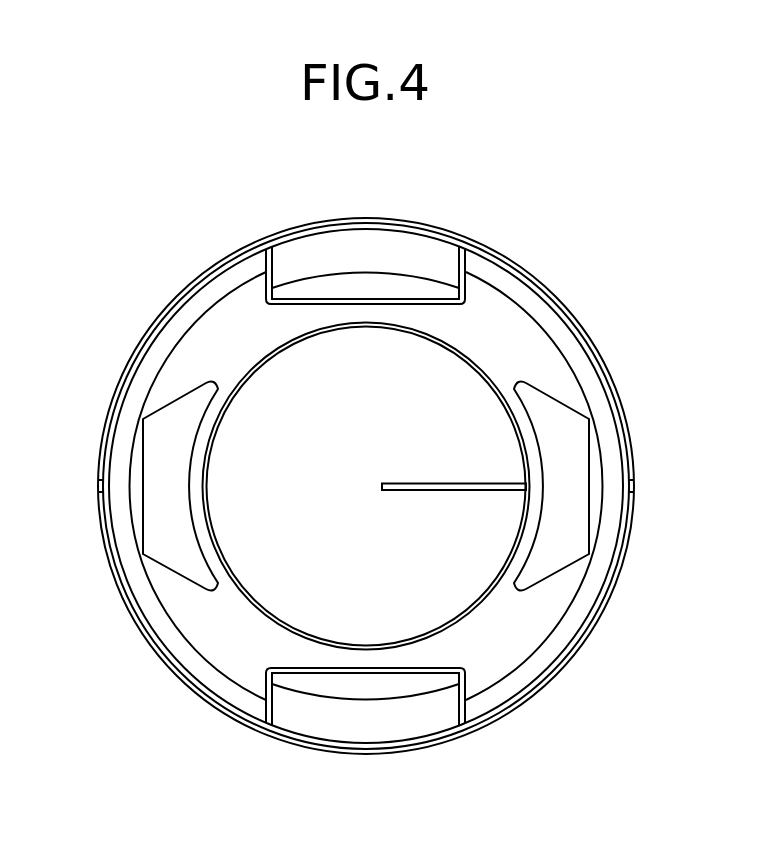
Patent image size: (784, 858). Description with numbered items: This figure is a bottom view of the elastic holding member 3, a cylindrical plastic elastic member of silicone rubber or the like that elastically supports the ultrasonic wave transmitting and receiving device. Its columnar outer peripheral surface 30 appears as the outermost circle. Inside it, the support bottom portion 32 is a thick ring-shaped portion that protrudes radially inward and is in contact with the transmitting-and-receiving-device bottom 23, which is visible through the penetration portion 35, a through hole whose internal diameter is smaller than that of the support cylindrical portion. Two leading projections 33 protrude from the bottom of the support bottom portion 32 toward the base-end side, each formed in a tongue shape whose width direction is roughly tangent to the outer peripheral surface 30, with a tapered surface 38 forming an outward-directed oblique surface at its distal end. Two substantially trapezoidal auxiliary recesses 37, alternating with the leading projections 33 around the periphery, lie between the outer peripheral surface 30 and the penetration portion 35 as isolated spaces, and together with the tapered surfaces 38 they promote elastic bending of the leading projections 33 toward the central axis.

The elastic holding member 3 is at (142, 298).
The transmitting-and-receiving-device bottom 23 is at (450, 585).
The outer peripheral surface 30 is at (607, 362).
The support bottom portion 32 is at (522, 333).
The leading projection 33 is at (467, 263).
The penetration portion 35 is at (258, 613).
The auxiliary recess 37 is at (158, 462).
The tapered surface 38 is at (377, 250).